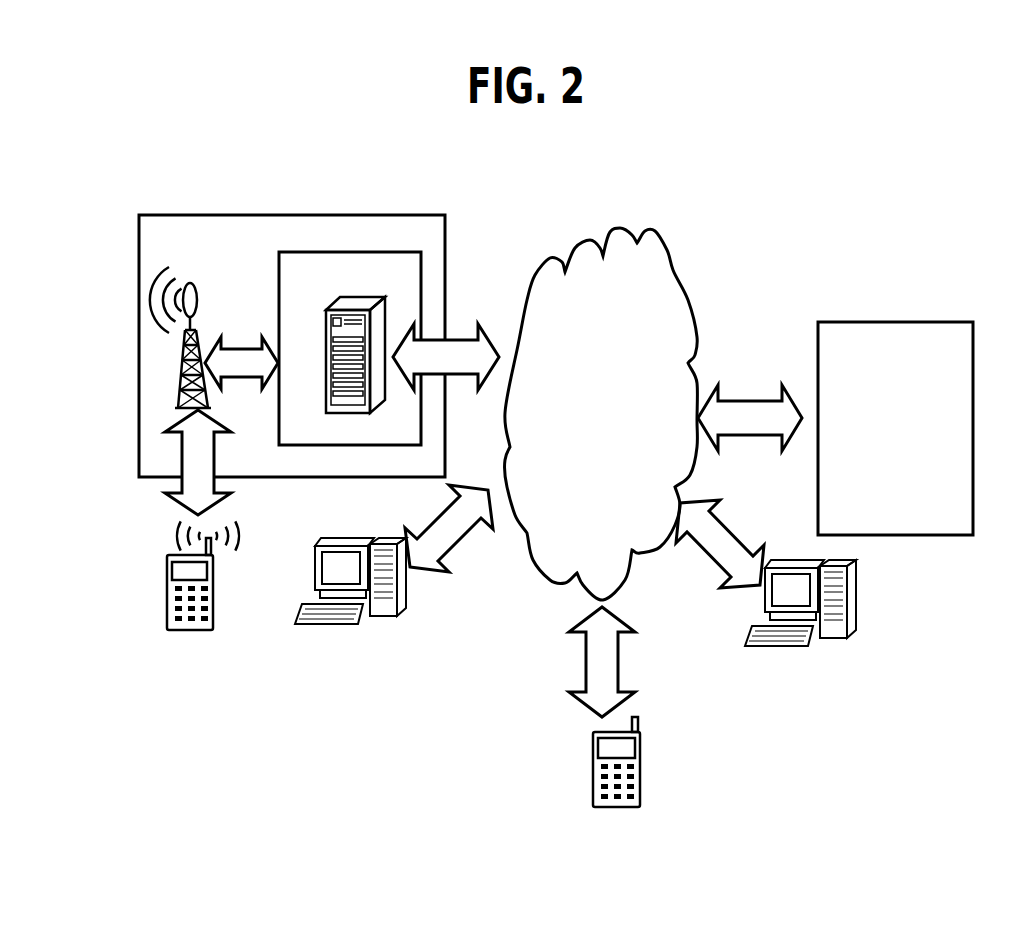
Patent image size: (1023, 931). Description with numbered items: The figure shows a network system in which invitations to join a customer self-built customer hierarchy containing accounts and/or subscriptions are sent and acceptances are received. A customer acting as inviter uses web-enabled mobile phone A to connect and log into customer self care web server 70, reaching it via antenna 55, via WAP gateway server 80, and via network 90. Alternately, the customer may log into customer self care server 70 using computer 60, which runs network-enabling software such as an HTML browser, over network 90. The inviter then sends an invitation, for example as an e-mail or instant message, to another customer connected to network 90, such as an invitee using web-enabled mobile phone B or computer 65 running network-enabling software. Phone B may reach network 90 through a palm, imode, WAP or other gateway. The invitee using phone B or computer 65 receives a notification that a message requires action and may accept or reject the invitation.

The antenna 55 is at (180, 375).
The WAP gateway server 80 is at (377, 297).
The network 90 is at (650, 230).
The customer self care web server 70 is at (927, 322).
The computer 60 is at (410, 588).
The computer 65 is at (858, 610).
The web-enabled mobile phone A is at (165, 605).
The web-enabled mobile phone B is at (640, 783).